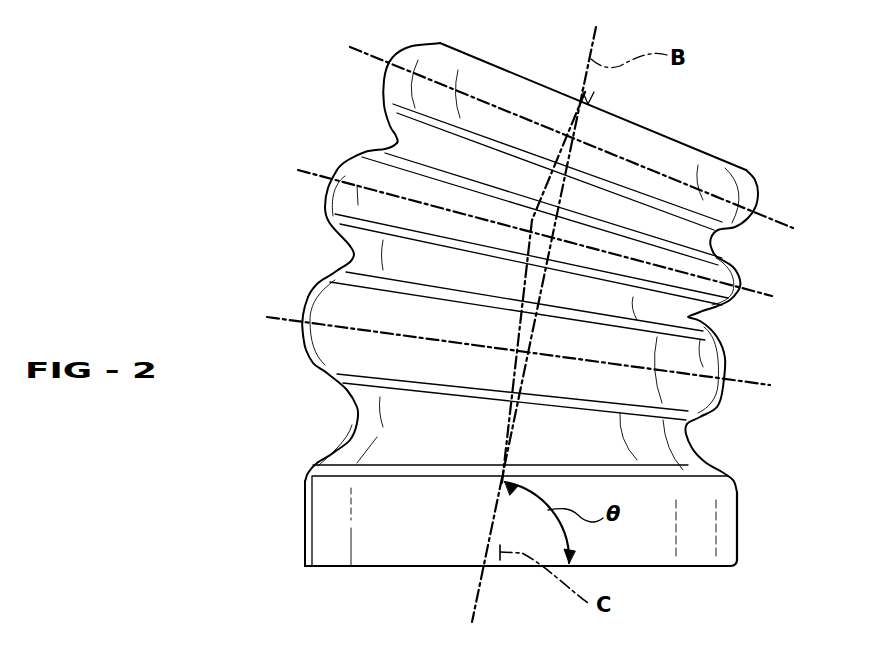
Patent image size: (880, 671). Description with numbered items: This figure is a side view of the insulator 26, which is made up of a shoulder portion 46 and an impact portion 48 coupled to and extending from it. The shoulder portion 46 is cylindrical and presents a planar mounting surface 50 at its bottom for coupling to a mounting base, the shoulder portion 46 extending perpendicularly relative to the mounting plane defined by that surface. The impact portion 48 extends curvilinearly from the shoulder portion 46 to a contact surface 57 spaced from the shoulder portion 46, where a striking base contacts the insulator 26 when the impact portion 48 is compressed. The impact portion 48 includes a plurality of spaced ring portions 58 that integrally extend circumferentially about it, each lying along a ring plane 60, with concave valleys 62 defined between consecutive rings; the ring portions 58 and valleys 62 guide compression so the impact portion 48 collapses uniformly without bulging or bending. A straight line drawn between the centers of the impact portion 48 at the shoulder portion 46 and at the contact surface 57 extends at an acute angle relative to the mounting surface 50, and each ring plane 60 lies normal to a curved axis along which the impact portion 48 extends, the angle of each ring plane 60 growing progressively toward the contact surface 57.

The insulator 26 is at (322, 350).
The shoulder portion 46 is at (320, 535).
The impact portion 48 is at (335, 190).
The mounting surface 50 is at (627, 568).
The contact surface 57 is at (190, 0).
The ring portions 58 is at (752, 216).
The ring planes 60 is at (350, 47).
The valleys 62 is at (390, 136).